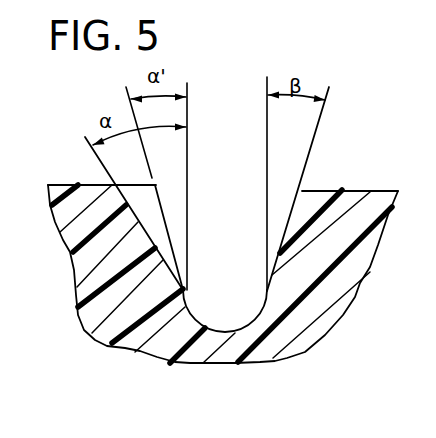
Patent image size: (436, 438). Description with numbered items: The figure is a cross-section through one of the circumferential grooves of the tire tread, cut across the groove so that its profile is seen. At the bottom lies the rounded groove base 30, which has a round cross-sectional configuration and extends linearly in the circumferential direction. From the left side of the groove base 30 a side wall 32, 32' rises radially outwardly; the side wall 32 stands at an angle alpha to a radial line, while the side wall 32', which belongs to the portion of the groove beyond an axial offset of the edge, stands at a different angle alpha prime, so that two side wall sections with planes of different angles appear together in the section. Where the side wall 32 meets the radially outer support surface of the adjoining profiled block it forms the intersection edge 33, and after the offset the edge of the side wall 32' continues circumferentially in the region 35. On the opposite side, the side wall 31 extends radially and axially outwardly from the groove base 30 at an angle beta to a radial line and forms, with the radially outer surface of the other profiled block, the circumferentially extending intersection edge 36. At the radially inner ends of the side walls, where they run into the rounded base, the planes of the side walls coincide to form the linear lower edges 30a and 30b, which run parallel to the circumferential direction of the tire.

The groove base 30 is at (238, 331).
The linear lower edge 30a is at (187, 292).
The linear lower edge 30b is at (267, 292).
The side wall 31 is at (271, 277).
The side wall 32 is at (207, 274).
The side wall 32' is at (79, 229).
The intersection edge 33 is at (109, 184).
The intersection edge region 35 is at (154, 185).
The intersection edge 36 is at (301, 190).